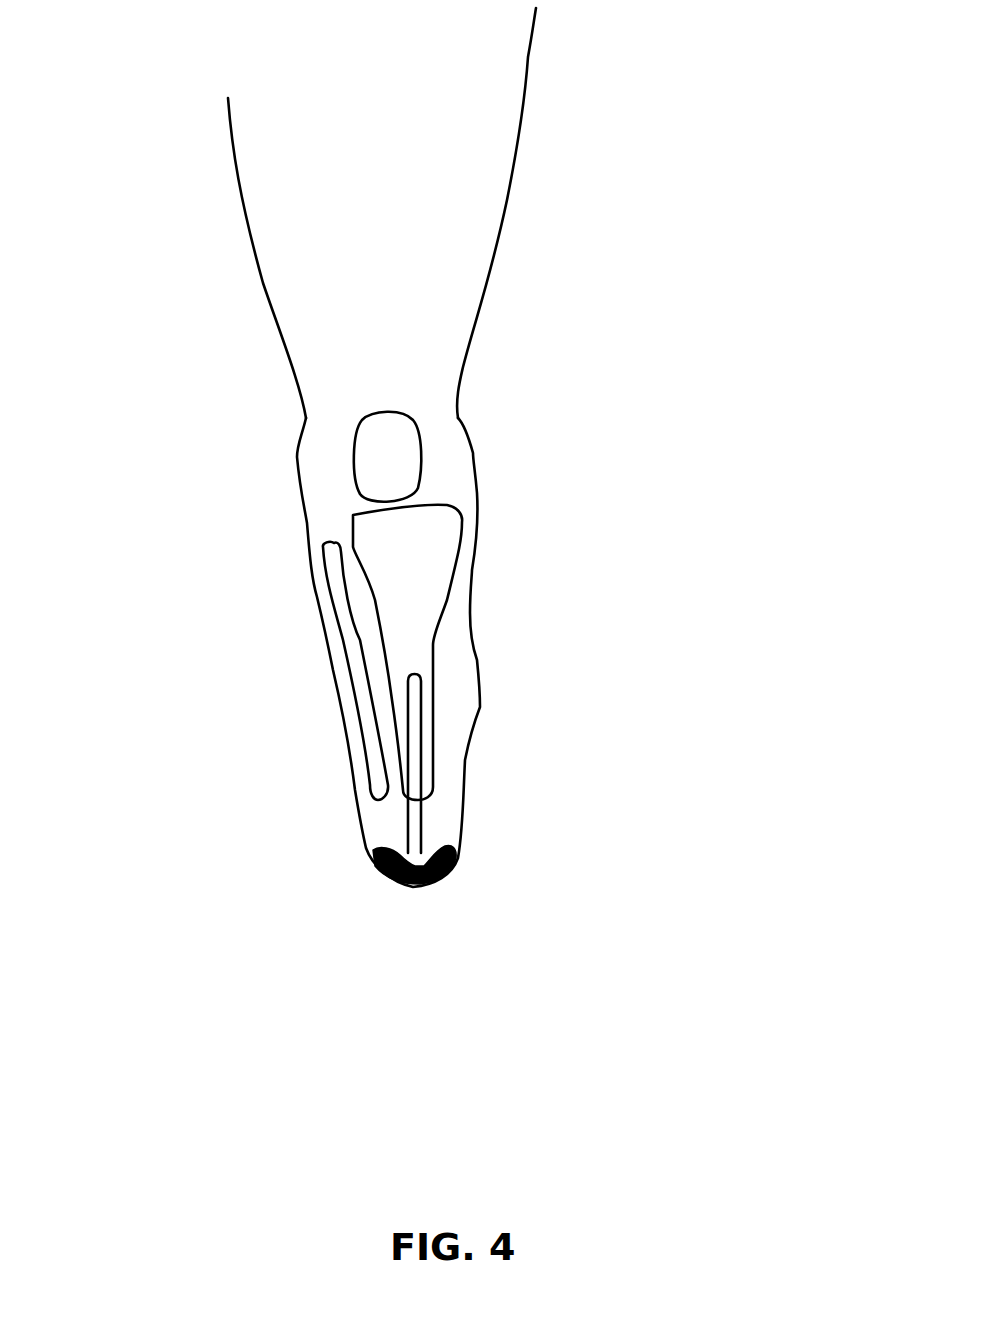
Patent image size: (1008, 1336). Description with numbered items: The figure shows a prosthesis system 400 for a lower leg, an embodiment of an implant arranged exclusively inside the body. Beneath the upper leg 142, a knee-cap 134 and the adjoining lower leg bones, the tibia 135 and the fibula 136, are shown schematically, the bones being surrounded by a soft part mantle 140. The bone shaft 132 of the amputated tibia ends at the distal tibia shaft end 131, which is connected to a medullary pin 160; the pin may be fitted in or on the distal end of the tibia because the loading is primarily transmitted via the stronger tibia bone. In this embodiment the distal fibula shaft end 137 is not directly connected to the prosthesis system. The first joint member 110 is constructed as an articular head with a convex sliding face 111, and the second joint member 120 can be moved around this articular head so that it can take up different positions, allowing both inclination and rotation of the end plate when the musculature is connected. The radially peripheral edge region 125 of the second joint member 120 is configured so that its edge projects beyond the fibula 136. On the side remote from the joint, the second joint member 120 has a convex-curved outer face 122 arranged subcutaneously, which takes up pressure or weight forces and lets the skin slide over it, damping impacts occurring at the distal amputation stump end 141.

The prosthesis system 400 is at (556, 819).
The upper leg 142 is at (455, 222).
The soft part mantle 140 is at (457, 683).
The knee-cap 134 is at (395, 475).
The tibia 135 is at (410, 540).
The fibula 136 is at (345, 605).
The bone shaft 132 is at (410, 645).
The distal fibula shaft end 137 is at (380, 760).
The distal tibia shaft end 131 is at (447, 787).
The convex sliding face 111 is at (432, 842).
The medullary pin 160 is at (383, 812).
The first joint member 110 is at (408, 812).
The radially peripheral edge region 125 is at (373, 858).
The second joint member 120 is at (445, 873).
The outer face 122 is at (432, 883).
The distal amputation stump end 141 is at (385, 880).